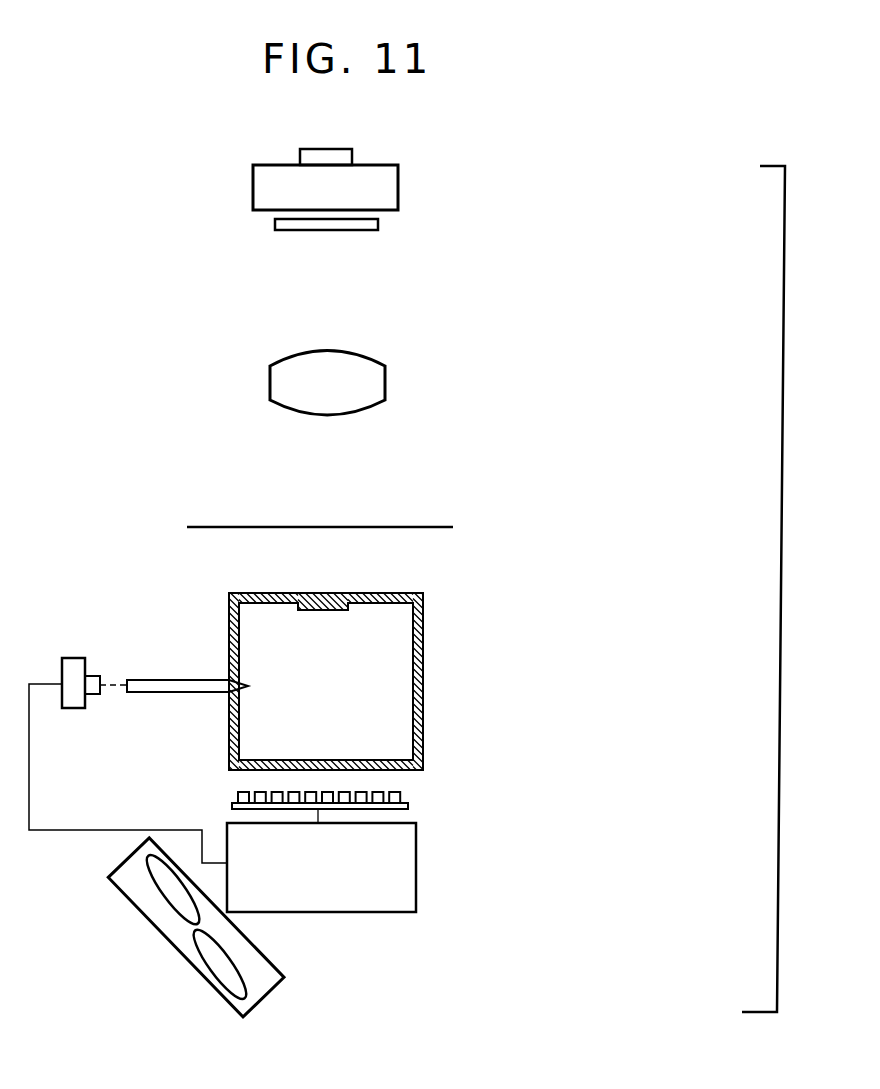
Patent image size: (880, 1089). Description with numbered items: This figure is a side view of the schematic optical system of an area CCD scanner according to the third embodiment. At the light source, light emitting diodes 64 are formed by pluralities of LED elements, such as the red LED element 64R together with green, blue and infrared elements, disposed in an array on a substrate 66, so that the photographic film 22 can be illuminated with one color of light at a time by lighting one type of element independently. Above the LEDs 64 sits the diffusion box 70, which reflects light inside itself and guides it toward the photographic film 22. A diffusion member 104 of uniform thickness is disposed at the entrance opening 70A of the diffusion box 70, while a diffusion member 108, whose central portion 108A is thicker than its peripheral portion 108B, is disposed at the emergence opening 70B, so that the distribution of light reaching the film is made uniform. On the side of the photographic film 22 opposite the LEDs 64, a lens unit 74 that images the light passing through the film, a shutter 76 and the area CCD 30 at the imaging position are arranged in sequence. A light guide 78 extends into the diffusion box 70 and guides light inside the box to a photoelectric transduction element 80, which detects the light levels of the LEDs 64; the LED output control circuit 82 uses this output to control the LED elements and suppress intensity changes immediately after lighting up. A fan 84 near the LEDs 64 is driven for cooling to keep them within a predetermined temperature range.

The area CCD 30 is at (392, 188).
The shutter 76 is at (378, 226).
The lens unit 74 is at (370, 384).
The photographic film 22 is at (428, 526).
The diffusion box 70 is at (423, 688).
The emergence opening 70B is at (357, 595).
The entrance opening 70A is at (396, 768).
The diffusion member 108 is at (316, 583).
The central portion 108A is at (318, 611).
The peripheral portion 108B is at (382, 603).
The diffusion member 104 is at (323, 760).
The photoelectric transduction element 80 is at (74, 668).
The light guide 78 is at (172, 680).
The light emitting diodes 64 is at (449, 820).
The LED element 64R is at (410, 797).
The substrate 66 is at (412, 808).
The LED output control circuit 82 is at (376, 914).
The fan 84 is at (205, 963).